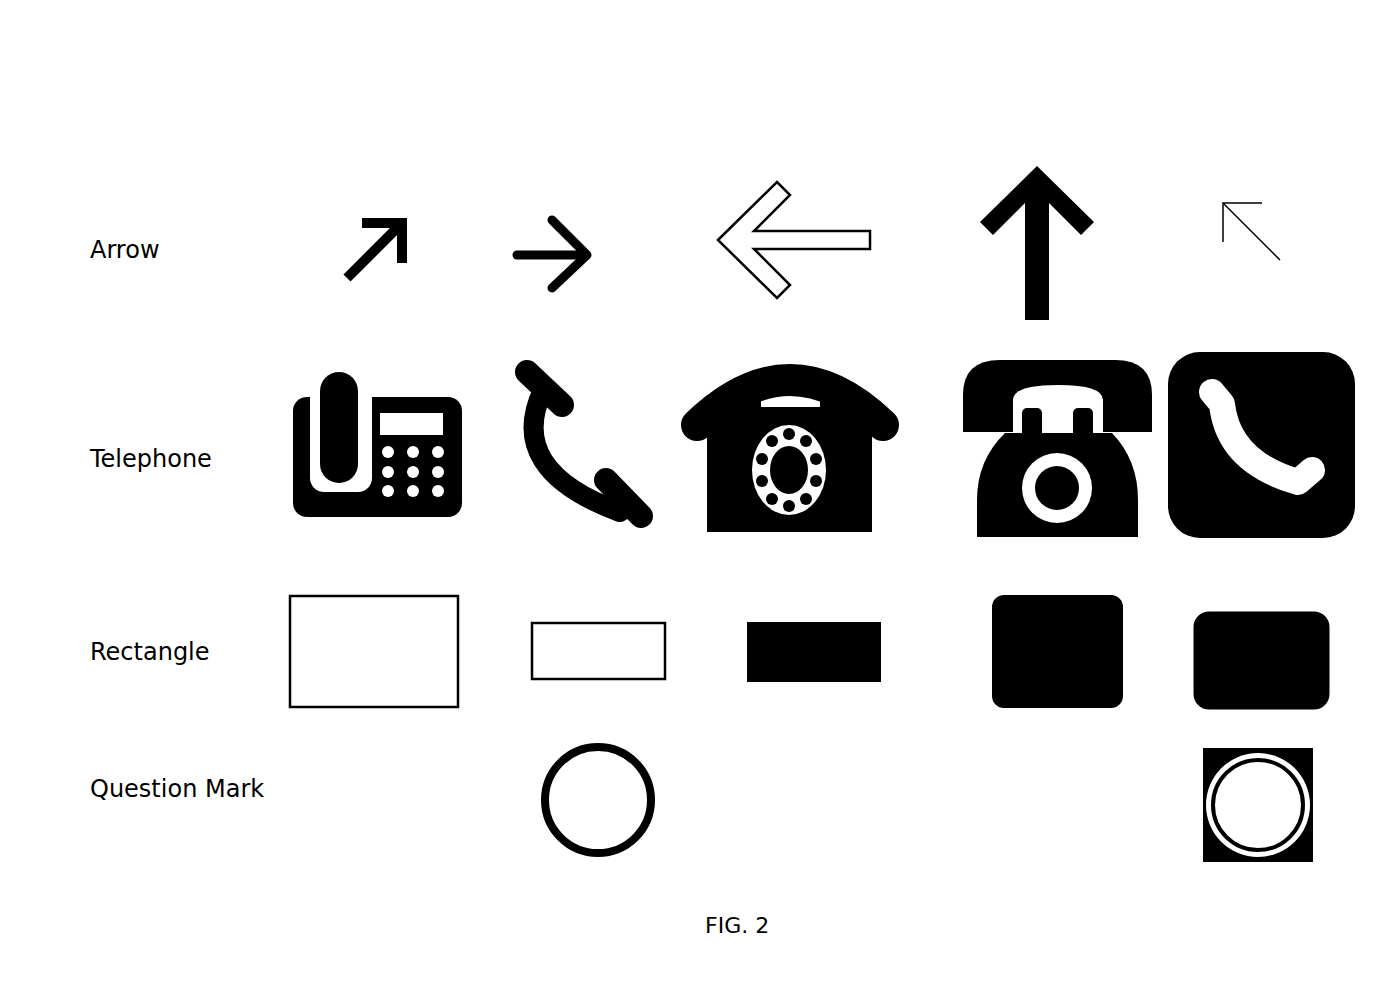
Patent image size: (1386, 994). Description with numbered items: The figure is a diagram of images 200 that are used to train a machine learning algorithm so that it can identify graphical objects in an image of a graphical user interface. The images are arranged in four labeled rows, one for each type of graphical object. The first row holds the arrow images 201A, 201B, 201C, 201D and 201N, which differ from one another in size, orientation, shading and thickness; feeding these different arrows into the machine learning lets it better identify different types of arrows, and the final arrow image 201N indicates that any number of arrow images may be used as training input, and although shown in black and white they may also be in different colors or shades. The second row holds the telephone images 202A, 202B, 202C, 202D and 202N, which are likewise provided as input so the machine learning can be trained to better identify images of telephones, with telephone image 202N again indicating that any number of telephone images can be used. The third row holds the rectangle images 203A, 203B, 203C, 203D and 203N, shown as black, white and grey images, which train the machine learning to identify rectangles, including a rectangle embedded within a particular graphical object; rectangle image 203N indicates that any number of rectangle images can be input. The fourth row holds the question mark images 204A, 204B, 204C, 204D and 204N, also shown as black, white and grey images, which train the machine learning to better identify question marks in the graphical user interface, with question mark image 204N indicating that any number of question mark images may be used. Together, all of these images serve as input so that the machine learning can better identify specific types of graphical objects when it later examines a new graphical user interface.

The diagram of images 200 is at (688, 64).
The arrow image 201A is at (390, 218).
The arrow image 201B is at (563, 222).
The arrow image 201C is at (788, 195).
The arrow image 201D is at (1057, 182).
The arrow image 201N is at (1240, 202).
The telephone image 202A is at (397, 397).
The telephone image 202B is at (555, 378).
The telephone image 202C is at (813, 365).
The telephone image 202D is at (1077, 363).
The telephone image 202N is at (1253, 352).
The rectangle image 203A is at (372, 596).
The rectangle image 203B is at (590, 623).
The rectangle image 203C is at (817, 622).
The rectangle image 203D is at (1053, 595).
The rectangle image 203N is at (1253, 613).
The question mark image 204A is at (373, 752).
The question mark image 204B is at (607, 745).
The question mark image 204C is at (825, 770).
The question mark image 204D is at (1082, 752).
The question mark image 204N is at (1295, 748).